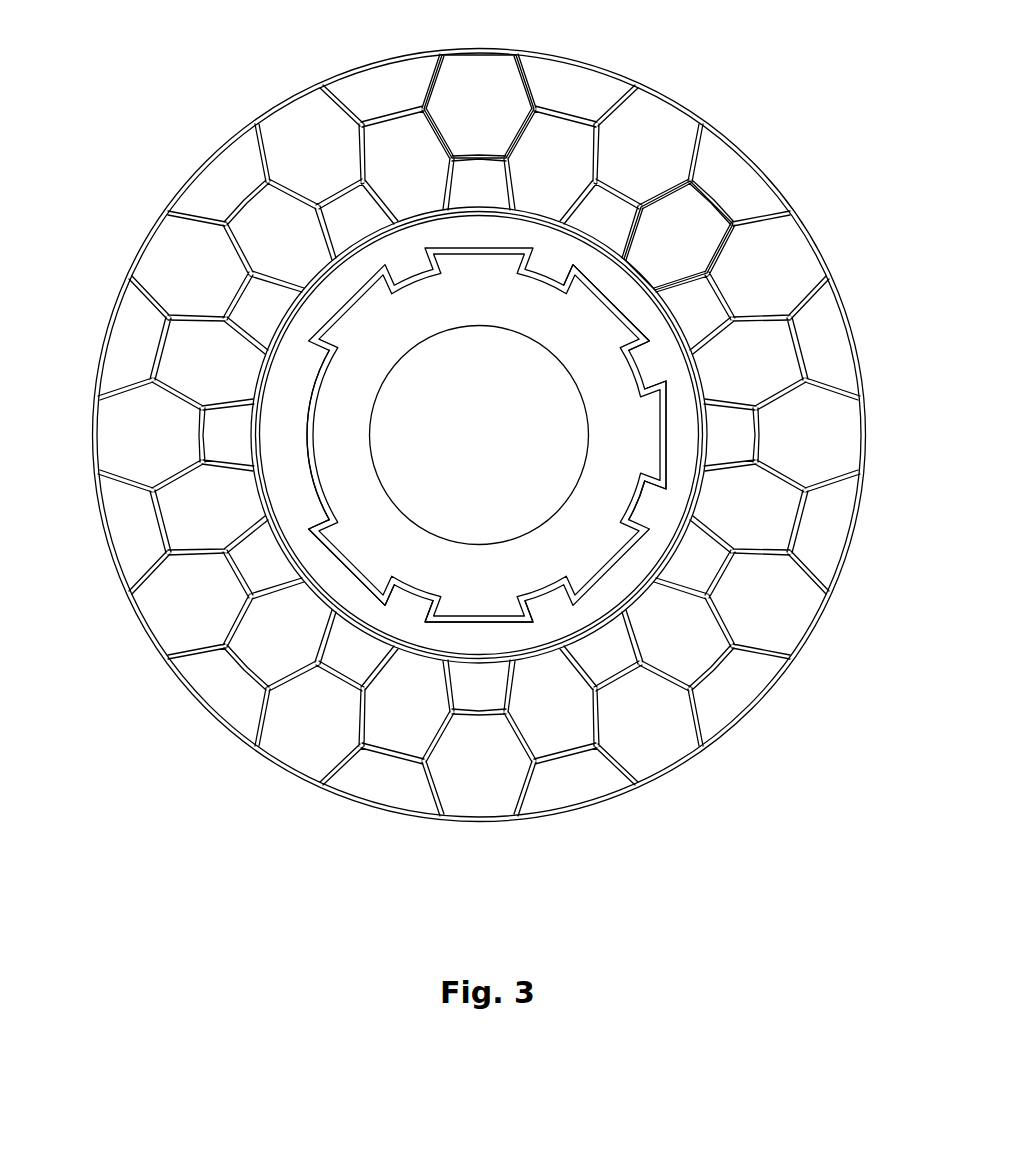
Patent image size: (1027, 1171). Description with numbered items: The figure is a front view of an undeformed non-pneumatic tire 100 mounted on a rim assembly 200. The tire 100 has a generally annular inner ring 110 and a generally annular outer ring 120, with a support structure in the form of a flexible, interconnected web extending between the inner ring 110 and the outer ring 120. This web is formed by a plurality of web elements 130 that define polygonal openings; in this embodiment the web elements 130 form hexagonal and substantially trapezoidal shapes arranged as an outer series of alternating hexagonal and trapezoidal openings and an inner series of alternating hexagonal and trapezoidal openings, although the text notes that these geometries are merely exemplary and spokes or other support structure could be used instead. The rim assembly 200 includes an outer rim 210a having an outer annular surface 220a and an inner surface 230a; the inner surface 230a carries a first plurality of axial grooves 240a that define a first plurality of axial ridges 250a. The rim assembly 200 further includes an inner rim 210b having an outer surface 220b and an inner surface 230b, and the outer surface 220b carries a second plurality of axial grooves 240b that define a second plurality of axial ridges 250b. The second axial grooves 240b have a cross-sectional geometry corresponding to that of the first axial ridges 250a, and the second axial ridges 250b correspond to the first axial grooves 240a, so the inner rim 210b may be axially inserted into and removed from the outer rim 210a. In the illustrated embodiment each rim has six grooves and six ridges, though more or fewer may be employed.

The tire 100 is at (479, 411).
The inner ring 110 is at (645, 268).
The outer ring 120 is at (392, 58).
The web elements 130 is at (521, 72).
The rim assembly 200 is at (480, 536).
The outer rim 210a is at (513, 262).
The inner rim 210b is at (513, 315).
The outer annular surface 220a is at (697, 390).
The outer surface 220b is at (332, 503).
The inner surface 230a is at (627, 520).
The inner surface 230b is at (518, 533).
The first plurality of axial grooves 240a is at (378, 597).
The second plurality of axial grooves 240b is at (605, 341).
The first plurality of axial ridges 250a is at (482, 605).
The second plurality of axial ridges 250b is at (658, 412).